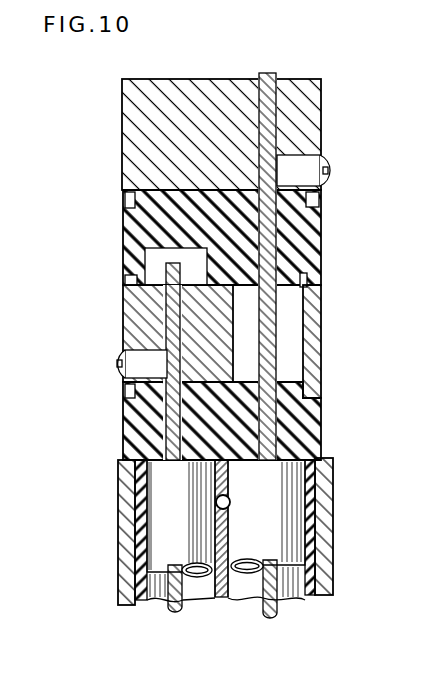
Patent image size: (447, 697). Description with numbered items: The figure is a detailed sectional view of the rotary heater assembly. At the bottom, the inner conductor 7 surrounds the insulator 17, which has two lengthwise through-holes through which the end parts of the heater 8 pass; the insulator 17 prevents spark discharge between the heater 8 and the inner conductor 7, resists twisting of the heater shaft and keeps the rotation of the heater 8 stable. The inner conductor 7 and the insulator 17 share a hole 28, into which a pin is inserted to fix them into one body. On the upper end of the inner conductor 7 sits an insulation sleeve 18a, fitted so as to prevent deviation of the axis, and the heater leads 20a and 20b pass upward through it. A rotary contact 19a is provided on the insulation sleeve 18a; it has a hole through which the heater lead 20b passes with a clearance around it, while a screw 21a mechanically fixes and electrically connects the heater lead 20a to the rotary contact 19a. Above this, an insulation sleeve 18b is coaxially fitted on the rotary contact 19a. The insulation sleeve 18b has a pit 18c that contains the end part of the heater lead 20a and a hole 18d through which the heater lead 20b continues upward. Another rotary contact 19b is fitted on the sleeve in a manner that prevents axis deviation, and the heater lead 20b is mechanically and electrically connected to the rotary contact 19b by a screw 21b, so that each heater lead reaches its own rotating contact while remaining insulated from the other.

The inner conductor 7 is at (123, 542).
The heater 8 is at (306, 527).
The insulator 17 is at (138, 498).
The insulation sleeve 18a is at (123, 432).
The insulation sleeve 18b is at (311, 240).
The pit 18c is at (138, 272).
The hole 18d is at (304, 278).
The rotary contact 19a is at (123, 323).
The rotary contact 19b is at (318, 100).
The heater lead 20a is at (150, 268).
The heater lead 20b is at (269, 73).
The screw 21a is at (115, 372).
The screw 21b is at (328, 157).
The hole 28 is at (229, 497).